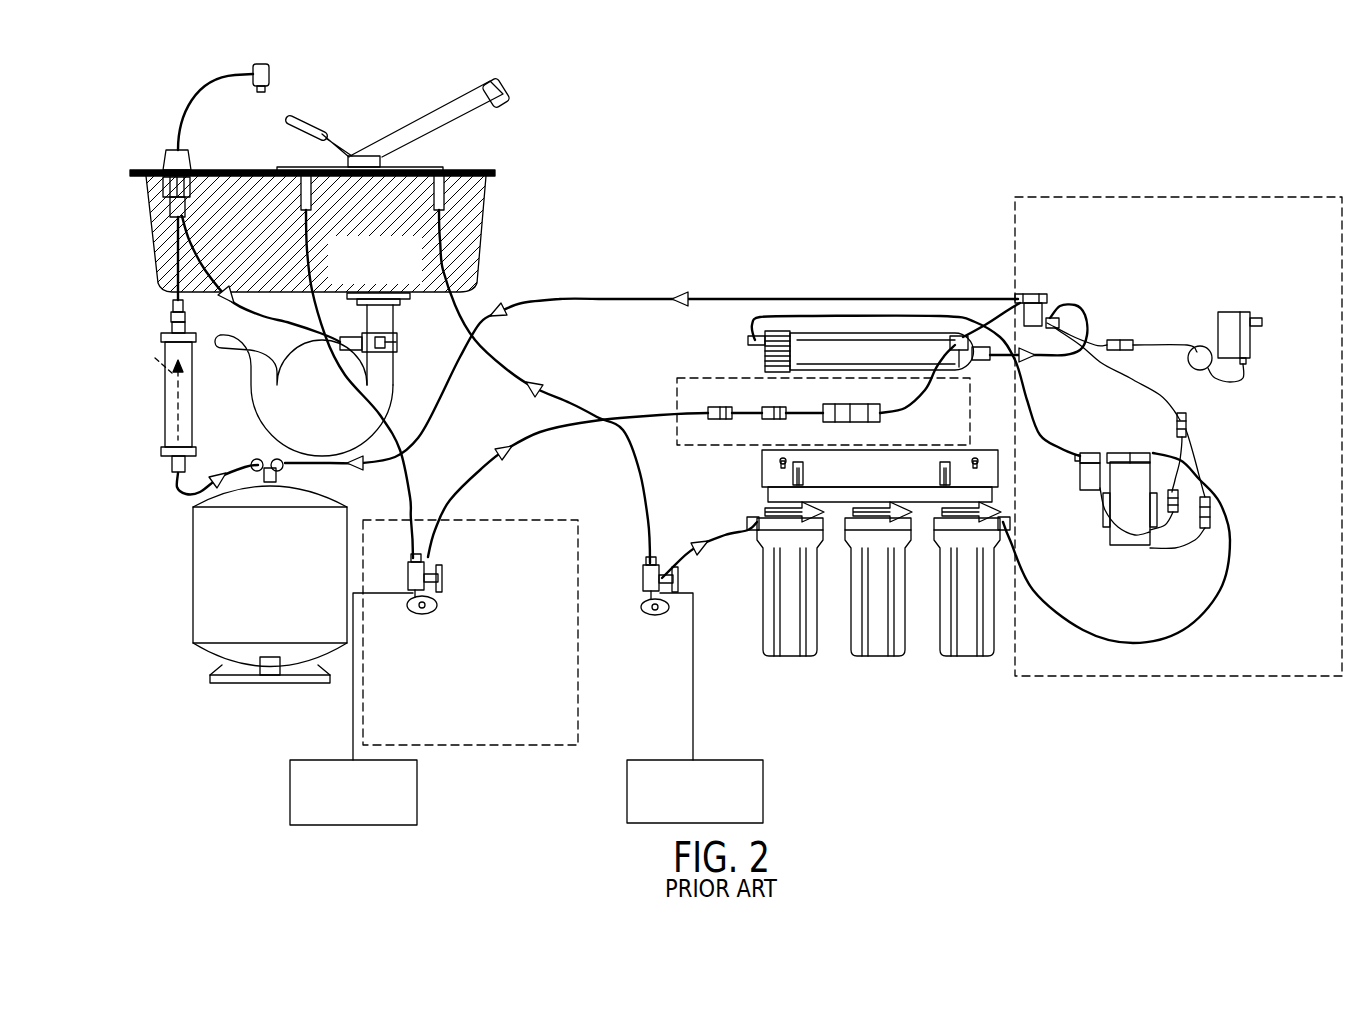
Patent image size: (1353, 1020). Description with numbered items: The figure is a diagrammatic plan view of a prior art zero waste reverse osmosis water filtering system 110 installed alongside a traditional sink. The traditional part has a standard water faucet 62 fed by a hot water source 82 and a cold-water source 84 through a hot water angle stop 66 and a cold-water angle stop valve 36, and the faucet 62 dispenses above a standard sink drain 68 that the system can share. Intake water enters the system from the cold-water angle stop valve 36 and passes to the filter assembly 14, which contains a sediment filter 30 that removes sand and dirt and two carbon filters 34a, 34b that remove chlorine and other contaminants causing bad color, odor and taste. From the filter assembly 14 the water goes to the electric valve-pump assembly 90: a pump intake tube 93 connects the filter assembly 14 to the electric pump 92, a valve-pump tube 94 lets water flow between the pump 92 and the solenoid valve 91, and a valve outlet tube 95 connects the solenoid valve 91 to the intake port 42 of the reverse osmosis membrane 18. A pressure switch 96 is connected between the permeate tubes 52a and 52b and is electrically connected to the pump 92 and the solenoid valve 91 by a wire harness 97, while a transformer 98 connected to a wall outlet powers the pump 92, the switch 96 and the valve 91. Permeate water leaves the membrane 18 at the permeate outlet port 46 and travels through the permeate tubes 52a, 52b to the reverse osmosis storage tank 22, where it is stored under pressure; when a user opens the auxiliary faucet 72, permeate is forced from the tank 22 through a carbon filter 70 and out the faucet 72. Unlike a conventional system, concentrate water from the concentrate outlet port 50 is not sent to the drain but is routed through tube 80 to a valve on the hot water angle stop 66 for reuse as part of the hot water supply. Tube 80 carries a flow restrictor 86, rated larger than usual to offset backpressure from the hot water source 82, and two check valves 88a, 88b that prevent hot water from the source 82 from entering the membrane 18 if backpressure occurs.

The zero waste reverse osmosis water filtering system 110 is at (925, 185).
The standard water faucet 62 is at (450, 127).
The auxiliary faucet 72 is at (180, 97).
The standard sink drain 68 is at (393, 368).
The carbon filter 70 is at (165, 427).
The reverse osmosis storage tank 22 is at (279, 545).
The permeate tube 52b is at (647, 298).
The hot water angle stop 66 is at (420, 617).
The hot water source 82 is at (290, 793).
The cold-water angle stop valve 36 is at (650, 617).
The cold-water source 84 is at (765, 805).
The tube 80 is at (538, 440).
The check valve 88a is at (713, 422).
The check valve 88b is at (767, 422).
The flow restrictor 86 is at (853, 410).
The reverse osmosis membrane 18 is at (833, 335).
The intake port 42 is at (747, 340).
The concentrate outlet port 50 is at (953, 335).
The permeate outlet port 46 is at (985, 362).
The valve outlet tube 95 is at (1032, 403).
The permeate tube 52a is at (1082, 313).
The filter assembly 14 is at (888, 476).
The sediment filter 30 is at (790, 658).
The carbon filter 34a is at (878, 658).
The carbon filter 34b is at (967, 658).
The electric valve-pump assembly 90 is at (1260, 197).
The pressure switch 96 is at (1033, 297).
The transformer 98 is at (1253, 337).
The wire harness 97 is at (1177, 413).
The solenoid valve 91 is at (1080, 493).
The valve-pump tube 94 is at (1098, 452).
The electric pump 92 is at (1118, 545).
The pump intake tube 93 is at (1220, 597).